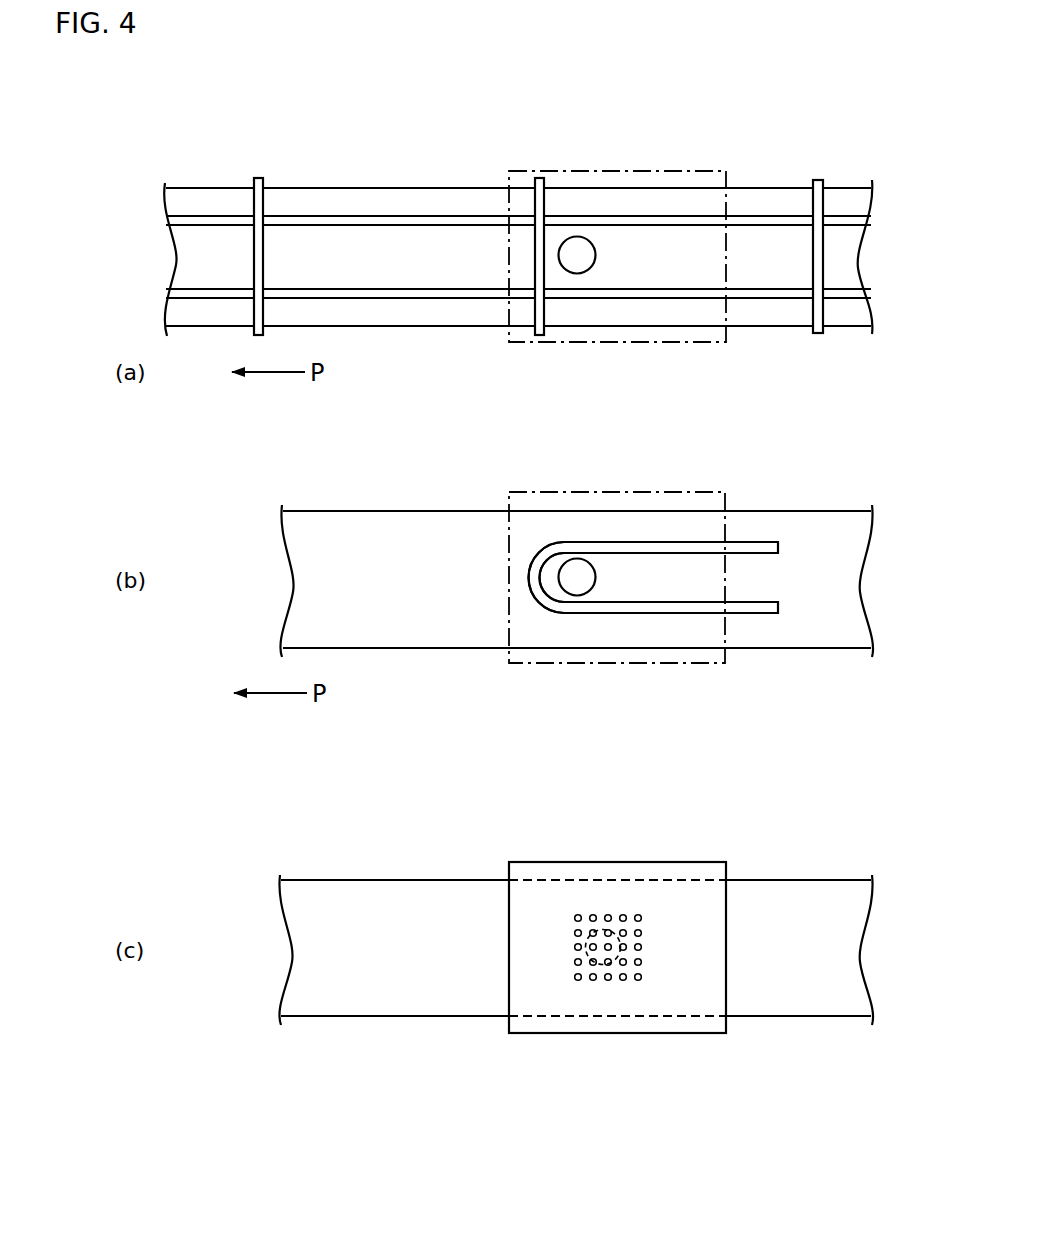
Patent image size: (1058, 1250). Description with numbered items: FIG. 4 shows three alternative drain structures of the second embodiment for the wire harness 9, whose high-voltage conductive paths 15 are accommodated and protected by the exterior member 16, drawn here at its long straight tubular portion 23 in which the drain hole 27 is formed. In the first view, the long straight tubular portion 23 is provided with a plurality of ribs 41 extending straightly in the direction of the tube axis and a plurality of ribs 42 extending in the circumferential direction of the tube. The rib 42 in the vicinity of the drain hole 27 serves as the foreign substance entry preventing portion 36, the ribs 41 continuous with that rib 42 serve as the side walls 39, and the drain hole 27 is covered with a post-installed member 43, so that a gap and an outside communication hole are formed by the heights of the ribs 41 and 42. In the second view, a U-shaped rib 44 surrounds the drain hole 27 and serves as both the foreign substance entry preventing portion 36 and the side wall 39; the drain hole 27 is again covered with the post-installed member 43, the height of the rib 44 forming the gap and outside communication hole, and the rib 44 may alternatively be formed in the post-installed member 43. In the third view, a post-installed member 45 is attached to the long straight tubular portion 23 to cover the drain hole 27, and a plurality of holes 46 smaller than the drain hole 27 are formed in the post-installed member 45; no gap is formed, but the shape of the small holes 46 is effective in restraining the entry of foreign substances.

The wire harness 9 is at (514, 122).
The high-voltage conductive path 15 is at (228, 253).
The exterior member 16 is at (518, 562).
The long straight tubular portion 23 is at (358, 187).
The drain hole 27 is at (577, 265).
The foreign substance entry preventing portion 36 is at (537, 252).
The side wall 39 is at (627, 215).
The rib 41 is at (432, 208).
The rib 42 is at (257, 310).
The post-installed member 43 is at (708, 171).
The U-shaped rib 44 is at (690, 543).
The post-installed member 45 is at (665, 862).
The hole 46 is at (578, 914).